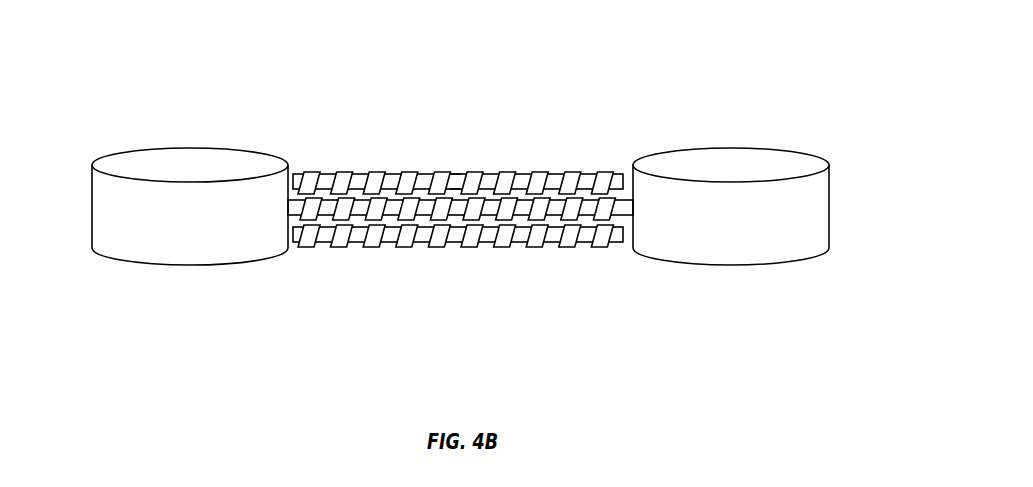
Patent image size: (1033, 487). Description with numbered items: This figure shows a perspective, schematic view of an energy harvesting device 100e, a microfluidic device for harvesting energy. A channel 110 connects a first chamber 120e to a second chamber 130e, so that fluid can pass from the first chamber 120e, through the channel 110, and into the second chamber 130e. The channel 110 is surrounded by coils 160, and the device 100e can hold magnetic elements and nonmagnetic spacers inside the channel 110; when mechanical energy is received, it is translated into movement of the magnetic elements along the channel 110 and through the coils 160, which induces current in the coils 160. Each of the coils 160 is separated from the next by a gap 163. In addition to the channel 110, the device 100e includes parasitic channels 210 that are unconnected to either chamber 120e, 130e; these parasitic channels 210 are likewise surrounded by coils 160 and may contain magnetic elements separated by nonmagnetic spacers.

The energy harvesting device 100e is at (707, 75).
The first chamber 120e is at (135, 242).
The second chamber 130e is at (785, 242).
The channel 110 is at (290, 208).
The parasitic channel 210 is at (366, 172).
The coil 160 is at (477, 172).
The gap 163 is at (460, 172).